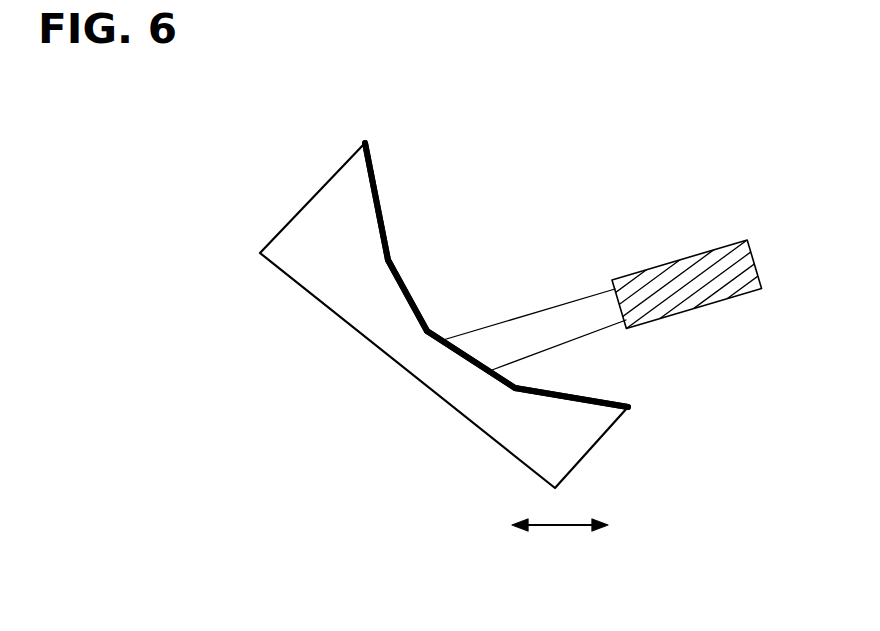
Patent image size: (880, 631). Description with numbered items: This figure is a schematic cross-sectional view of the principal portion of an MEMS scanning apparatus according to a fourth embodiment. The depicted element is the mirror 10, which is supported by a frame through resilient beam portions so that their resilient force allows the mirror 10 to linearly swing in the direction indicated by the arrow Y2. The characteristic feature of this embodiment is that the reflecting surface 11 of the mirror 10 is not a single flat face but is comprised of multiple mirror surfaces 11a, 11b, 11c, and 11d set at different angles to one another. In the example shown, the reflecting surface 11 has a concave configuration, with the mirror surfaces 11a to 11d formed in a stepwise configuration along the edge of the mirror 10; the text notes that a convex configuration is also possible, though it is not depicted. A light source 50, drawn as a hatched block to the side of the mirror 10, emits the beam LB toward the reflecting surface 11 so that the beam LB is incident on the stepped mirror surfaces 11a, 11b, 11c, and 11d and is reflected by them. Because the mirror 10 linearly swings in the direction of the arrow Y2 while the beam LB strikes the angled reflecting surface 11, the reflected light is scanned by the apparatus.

The mirror 10 is at (390, 339).
The reflecting surface 11 is at (373, 170).
The mirror surface 11a is at (601, 402).
The mirror surface 11b is at (517, 378).
The mirror surface 11c is at (409, 289).
The mirror surface 11d is at (383, 200).
The light source 50 is at (678, 276).
The beam LB is at (520, 333).
The arrow indicating swing direction Y2 is at (560, 543).